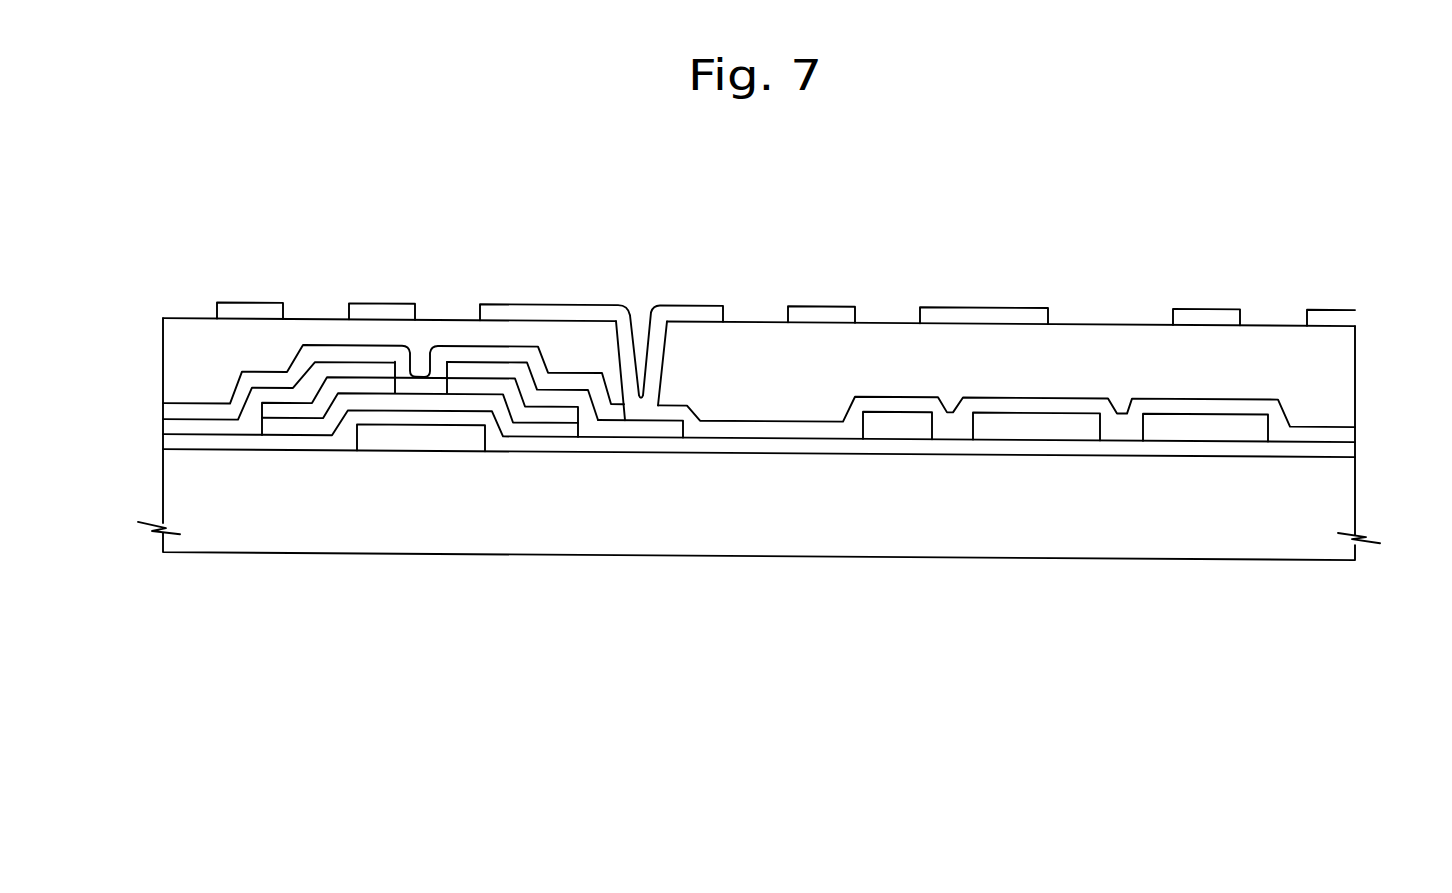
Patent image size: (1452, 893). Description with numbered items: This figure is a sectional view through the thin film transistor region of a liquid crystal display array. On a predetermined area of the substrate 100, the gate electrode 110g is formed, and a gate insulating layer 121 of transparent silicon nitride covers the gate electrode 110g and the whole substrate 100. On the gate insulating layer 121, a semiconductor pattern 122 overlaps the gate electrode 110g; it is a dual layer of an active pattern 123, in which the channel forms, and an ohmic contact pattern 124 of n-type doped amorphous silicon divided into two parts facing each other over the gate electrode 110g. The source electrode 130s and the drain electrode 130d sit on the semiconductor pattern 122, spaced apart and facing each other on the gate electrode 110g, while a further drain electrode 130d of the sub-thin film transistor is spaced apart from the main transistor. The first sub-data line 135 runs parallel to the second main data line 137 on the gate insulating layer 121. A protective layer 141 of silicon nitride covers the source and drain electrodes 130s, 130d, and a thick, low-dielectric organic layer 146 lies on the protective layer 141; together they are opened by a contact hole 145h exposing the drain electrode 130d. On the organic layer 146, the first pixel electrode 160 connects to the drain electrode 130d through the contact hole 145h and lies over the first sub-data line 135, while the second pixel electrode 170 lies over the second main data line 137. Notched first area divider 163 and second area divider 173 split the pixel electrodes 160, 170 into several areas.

The substrate 100 is at (1343, 505).
The gate electrode 110g is at (425, 440).
The gate insulating layer 121 is at (1343, 453).
The semiconductor pattern 122 is at (338, 497).
The active pattern 123 is at (318, 428).
The ohmic contact pattern 124 is at (280, 412).
The source electrode 130s is at (168, 427).
The drain electrode 130d is at (611, 430).
The first sub-data line 135 is at (1038, 430).
The second main data line 137 is at (1207, 432).
The protective layer 141 is at (172, 410).
The contact hole 145h is at (620, 353).
The organic layer 146 is at (173, 366).
The first pixel electrode 160 is at (251, 309).
The first area divider 163 is at (320, 318).
The second pixel electrode 170 is at (1207, 318).
The second area divider 173 is at (1273, 324).